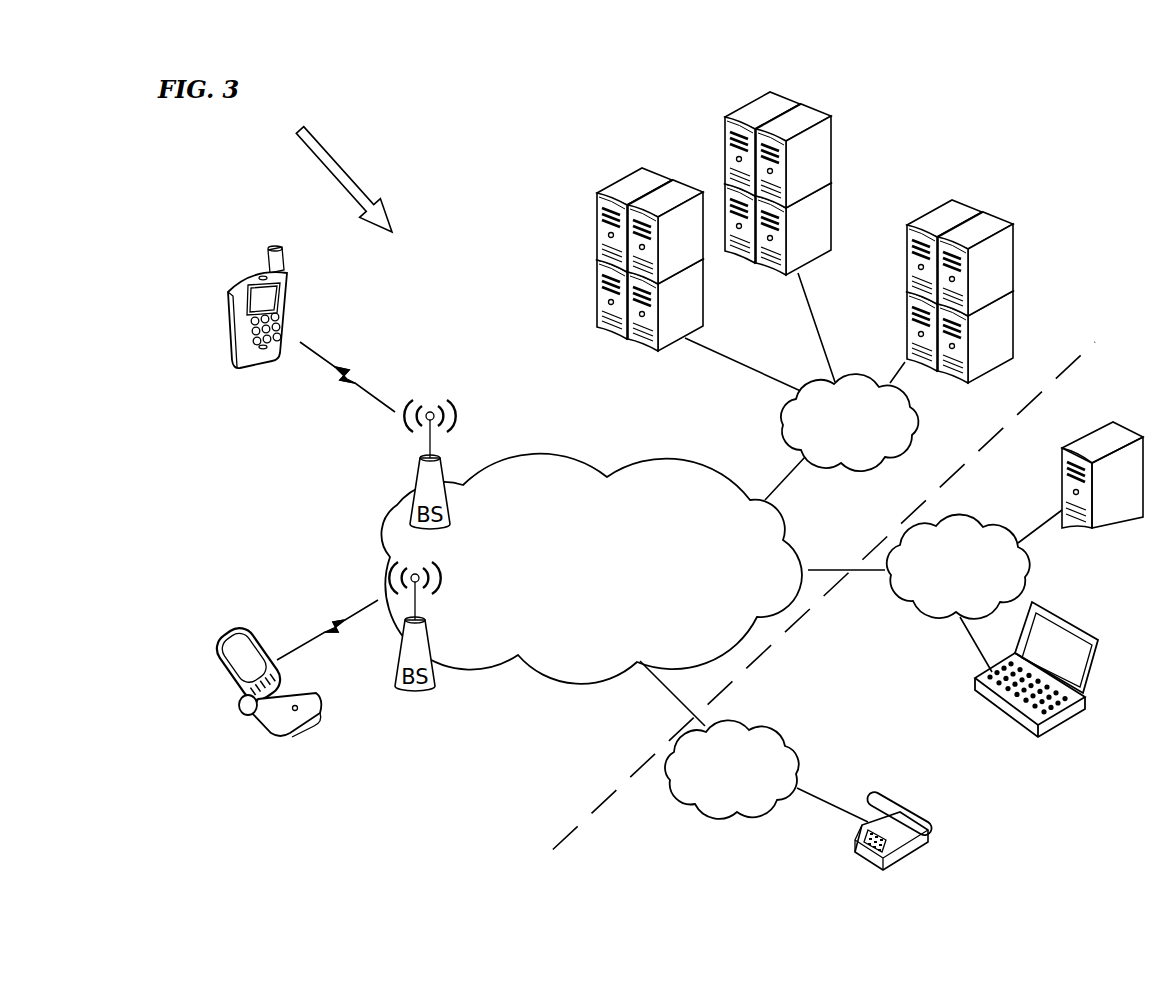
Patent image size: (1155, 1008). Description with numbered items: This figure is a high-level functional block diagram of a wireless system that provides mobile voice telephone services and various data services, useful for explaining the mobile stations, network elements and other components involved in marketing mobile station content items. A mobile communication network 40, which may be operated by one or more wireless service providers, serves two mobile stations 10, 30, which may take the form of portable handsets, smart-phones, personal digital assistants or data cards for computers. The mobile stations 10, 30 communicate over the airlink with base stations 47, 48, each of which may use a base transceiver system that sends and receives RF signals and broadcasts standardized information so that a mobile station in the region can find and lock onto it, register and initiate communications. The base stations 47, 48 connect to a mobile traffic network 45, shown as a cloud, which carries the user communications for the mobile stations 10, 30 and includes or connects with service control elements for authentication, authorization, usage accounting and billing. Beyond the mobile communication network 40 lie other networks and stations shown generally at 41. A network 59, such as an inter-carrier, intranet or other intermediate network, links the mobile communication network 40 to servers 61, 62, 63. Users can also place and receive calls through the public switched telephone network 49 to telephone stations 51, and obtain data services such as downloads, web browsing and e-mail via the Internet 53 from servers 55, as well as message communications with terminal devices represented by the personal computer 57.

The mobile station 10 is at (228, 291).
The mobile station 30 is at (210, 655).
The mobile communication network 40 is at (335, 173).
The other networks and stations 41 is at (821, 598).
The mobile traffic network 45 is at (498, 460).
The base station 47 is at (410, 477).
The base station 48 is at (432, 690).
The public switched telephone network 49 is at (800, 759).
The telephone station 51 is at (855, 852).
The Internet 53 is at (917, 612).
The server 55 is at (1060, 490).
The personal computer 57 is at (978, 708).
The network 59 is at (920, 438).
The server 61 is at (597, 245).
The server 62 is at (830, 168).
The server 63 is at (1012, 313).